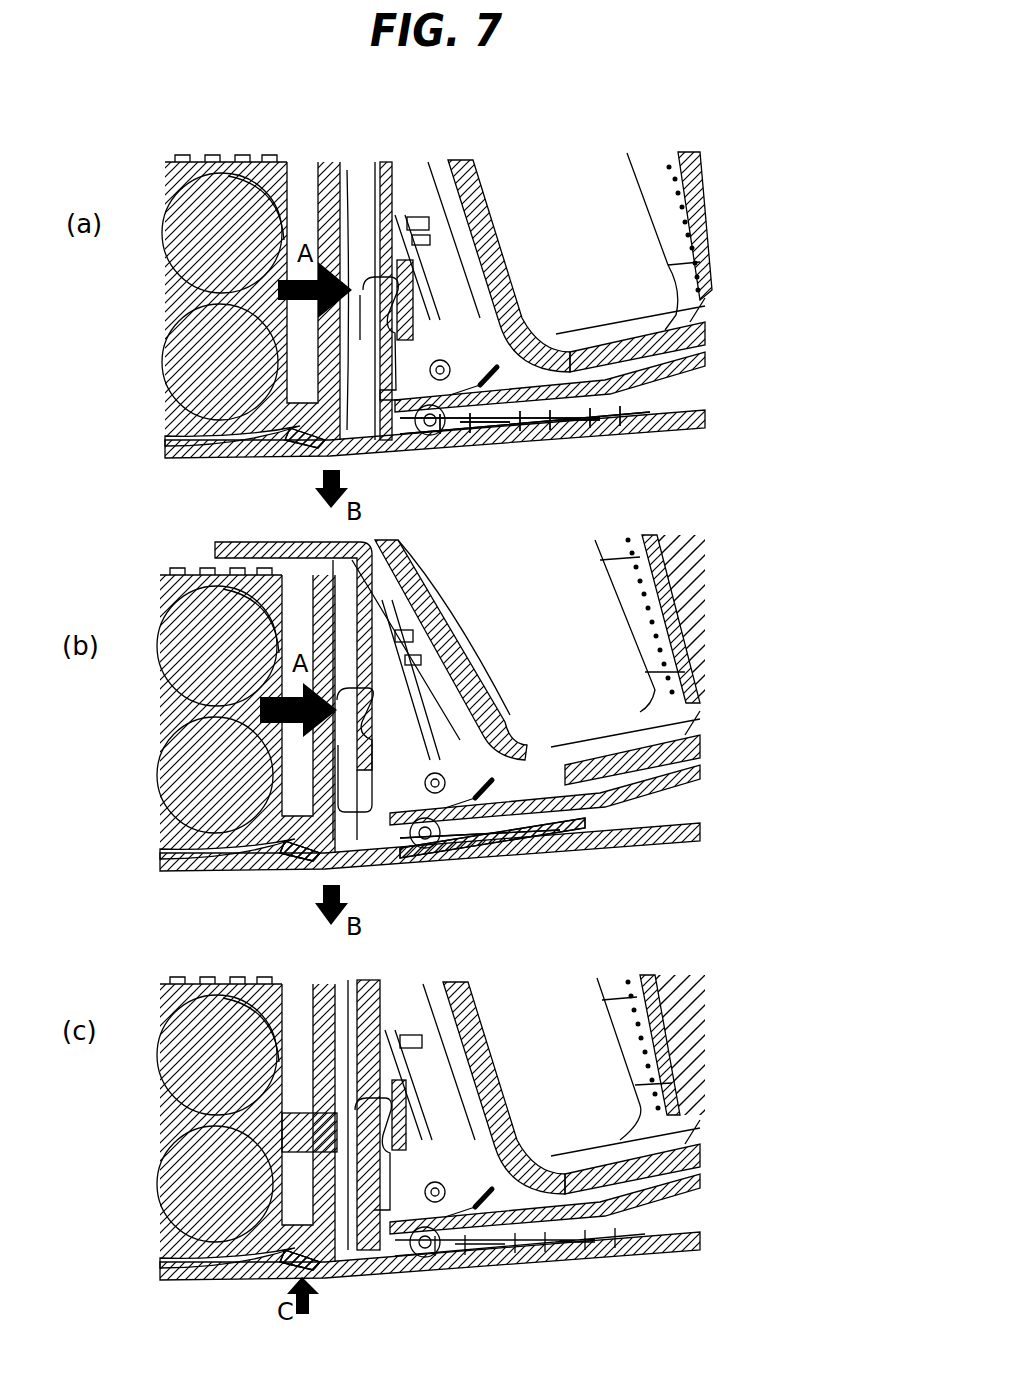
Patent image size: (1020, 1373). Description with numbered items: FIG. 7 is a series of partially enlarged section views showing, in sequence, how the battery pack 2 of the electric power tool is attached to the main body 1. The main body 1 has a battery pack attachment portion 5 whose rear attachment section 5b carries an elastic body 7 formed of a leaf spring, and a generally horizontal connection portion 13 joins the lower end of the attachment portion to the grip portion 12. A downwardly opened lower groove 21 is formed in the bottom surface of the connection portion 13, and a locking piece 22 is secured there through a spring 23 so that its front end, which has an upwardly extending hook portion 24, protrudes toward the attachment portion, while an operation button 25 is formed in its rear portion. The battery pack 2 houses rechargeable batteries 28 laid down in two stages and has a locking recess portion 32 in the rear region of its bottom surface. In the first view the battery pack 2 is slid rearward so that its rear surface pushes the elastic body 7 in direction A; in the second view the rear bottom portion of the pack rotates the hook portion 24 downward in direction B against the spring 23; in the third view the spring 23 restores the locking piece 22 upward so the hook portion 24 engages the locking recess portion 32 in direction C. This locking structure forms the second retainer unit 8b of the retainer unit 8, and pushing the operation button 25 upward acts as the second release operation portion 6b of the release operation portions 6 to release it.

The main body 1 is at (698, 205).
The battery pack 2 is at (187, 365).
The battery pack attachment portion 5 is at (357, 190).
The rear attachment section 5b is at (372, 630).
The release operation portions 6 is at (574, 430).
The second release operation portion 6b is at (525, 420).
The elastic body 7 is at (400, 300).
The retainer unit 8 is at (298, 498).
The second retainer unit 8b is at (300, 851).
The grip portion 12 is at (665, 182).
The connection portion 13 is at (623, 357).
The lower groove 21 is at (608, 398).
The locking piece 22 is at (437, 450).
The spring 23 is at (477, 400).
The hook portion 24 is at (308, 452).
The operation button 25 is at (492, 838).
The rechargeable batteries 28 is at (200, 333).
The locking recess portion 32 is at (275, 453).